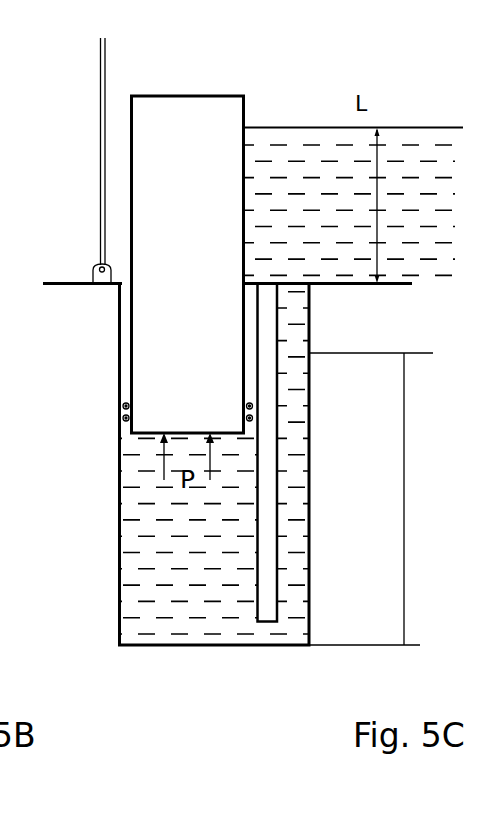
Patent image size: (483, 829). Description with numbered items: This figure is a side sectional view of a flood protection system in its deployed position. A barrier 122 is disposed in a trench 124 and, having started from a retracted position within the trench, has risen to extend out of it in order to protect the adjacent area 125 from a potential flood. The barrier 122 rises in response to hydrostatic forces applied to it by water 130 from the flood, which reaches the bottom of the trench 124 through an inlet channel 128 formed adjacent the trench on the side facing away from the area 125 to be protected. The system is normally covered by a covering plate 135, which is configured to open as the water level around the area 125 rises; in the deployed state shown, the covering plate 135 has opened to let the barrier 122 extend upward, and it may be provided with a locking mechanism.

The barrier 122 is at (200, 123).
The trench 124 is at (122, 510).
The area 125 is at (68, 279).
The inlet channel 128 is at (290, 557).
The water 130 is at (415, 160).
The covering plate 135 is at (100, 63).